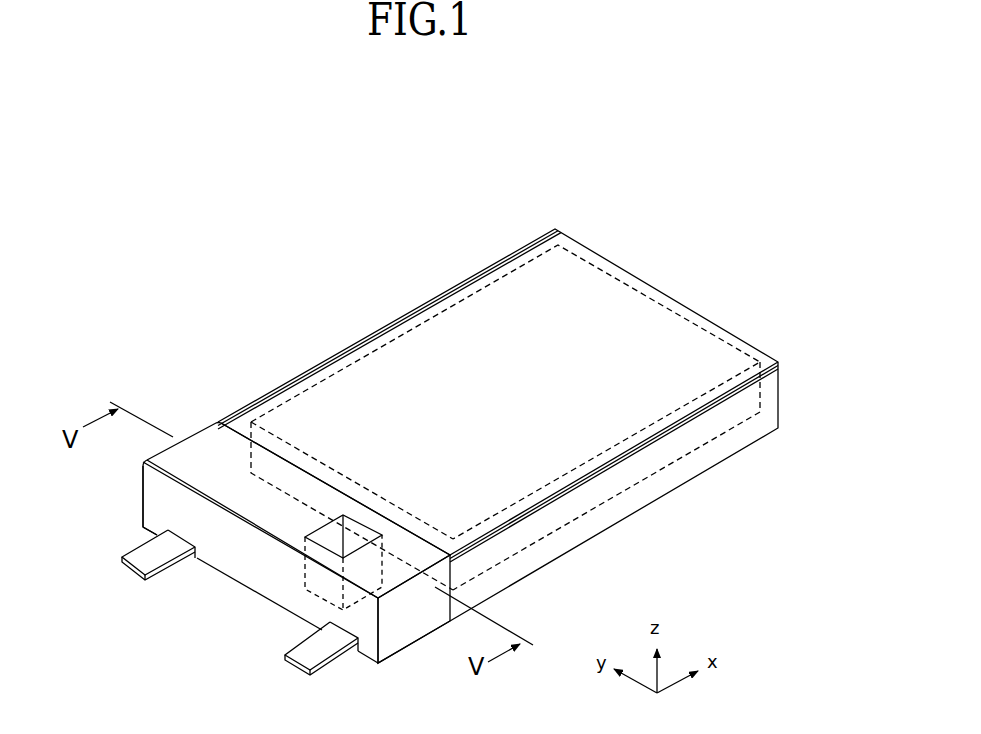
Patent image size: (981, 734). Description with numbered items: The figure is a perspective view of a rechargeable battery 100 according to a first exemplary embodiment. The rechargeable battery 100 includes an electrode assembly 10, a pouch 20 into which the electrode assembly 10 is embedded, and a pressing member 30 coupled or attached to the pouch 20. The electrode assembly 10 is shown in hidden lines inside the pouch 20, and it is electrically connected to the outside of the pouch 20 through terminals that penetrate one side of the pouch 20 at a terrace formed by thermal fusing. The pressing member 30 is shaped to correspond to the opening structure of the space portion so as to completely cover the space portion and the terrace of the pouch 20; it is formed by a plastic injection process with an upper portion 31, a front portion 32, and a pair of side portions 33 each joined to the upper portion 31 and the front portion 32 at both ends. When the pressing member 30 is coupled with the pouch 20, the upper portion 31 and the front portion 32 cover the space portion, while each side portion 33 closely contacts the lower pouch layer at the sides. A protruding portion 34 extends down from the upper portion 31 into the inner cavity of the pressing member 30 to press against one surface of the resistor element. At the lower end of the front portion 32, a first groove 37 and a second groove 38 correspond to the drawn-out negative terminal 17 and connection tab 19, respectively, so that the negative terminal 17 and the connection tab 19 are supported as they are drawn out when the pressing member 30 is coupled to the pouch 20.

The rechargeable battery 100 is at (327, 244).
The electrode assembly 10 is at (628, 487).
The pouch 20 is at (501, 254).
The pressing member 30 is at (212, 416).
The upper portion 31 is at (205, 443).
The front portion 32 is at (163, 503).
The side portion 33 is at (398, 627).
The protruding portion 34 is at (355, 538).
The negative terminal 17 is at (145, 560).
The connection tab 19 is at (308, 655).
The first groove 37 is at (177, 540).
The second groove 38 is at (340, 635).